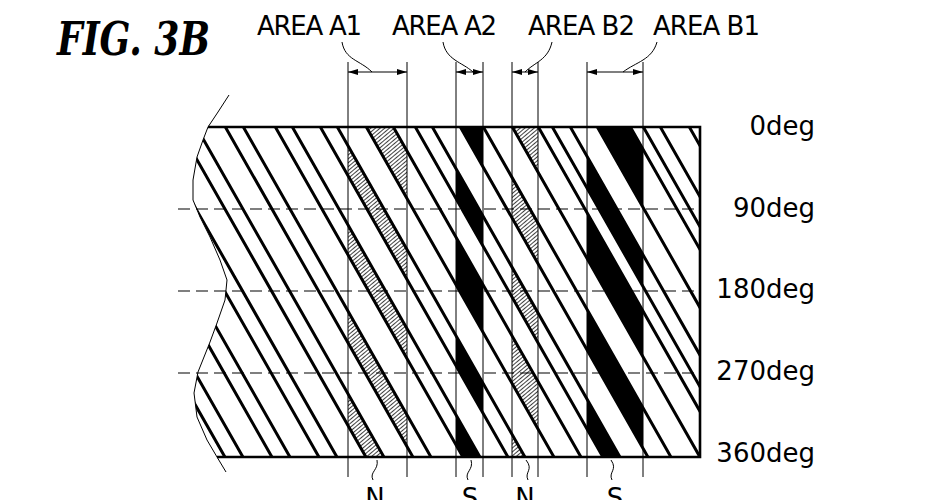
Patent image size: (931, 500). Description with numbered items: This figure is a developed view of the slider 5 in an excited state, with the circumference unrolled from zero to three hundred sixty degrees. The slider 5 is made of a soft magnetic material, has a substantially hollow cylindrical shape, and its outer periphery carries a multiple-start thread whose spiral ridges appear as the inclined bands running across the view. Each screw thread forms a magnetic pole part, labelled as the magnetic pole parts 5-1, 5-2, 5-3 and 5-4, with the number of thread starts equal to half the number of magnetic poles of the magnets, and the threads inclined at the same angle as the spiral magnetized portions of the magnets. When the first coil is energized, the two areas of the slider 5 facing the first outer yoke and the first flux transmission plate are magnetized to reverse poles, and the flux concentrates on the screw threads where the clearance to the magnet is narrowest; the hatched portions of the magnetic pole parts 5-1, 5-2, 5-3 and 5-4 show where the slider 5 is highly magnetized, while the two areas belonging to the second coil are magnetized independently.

The slider 5 is at (680, 127).
The magnetic pole part 5-1 is at (215, 172).
The magnetic pole part 5-2 is at (223, 277).
The magnetic pole part 5-3 is at (210, 347).
The magnetic pole part 5-4 is at (207, 408).